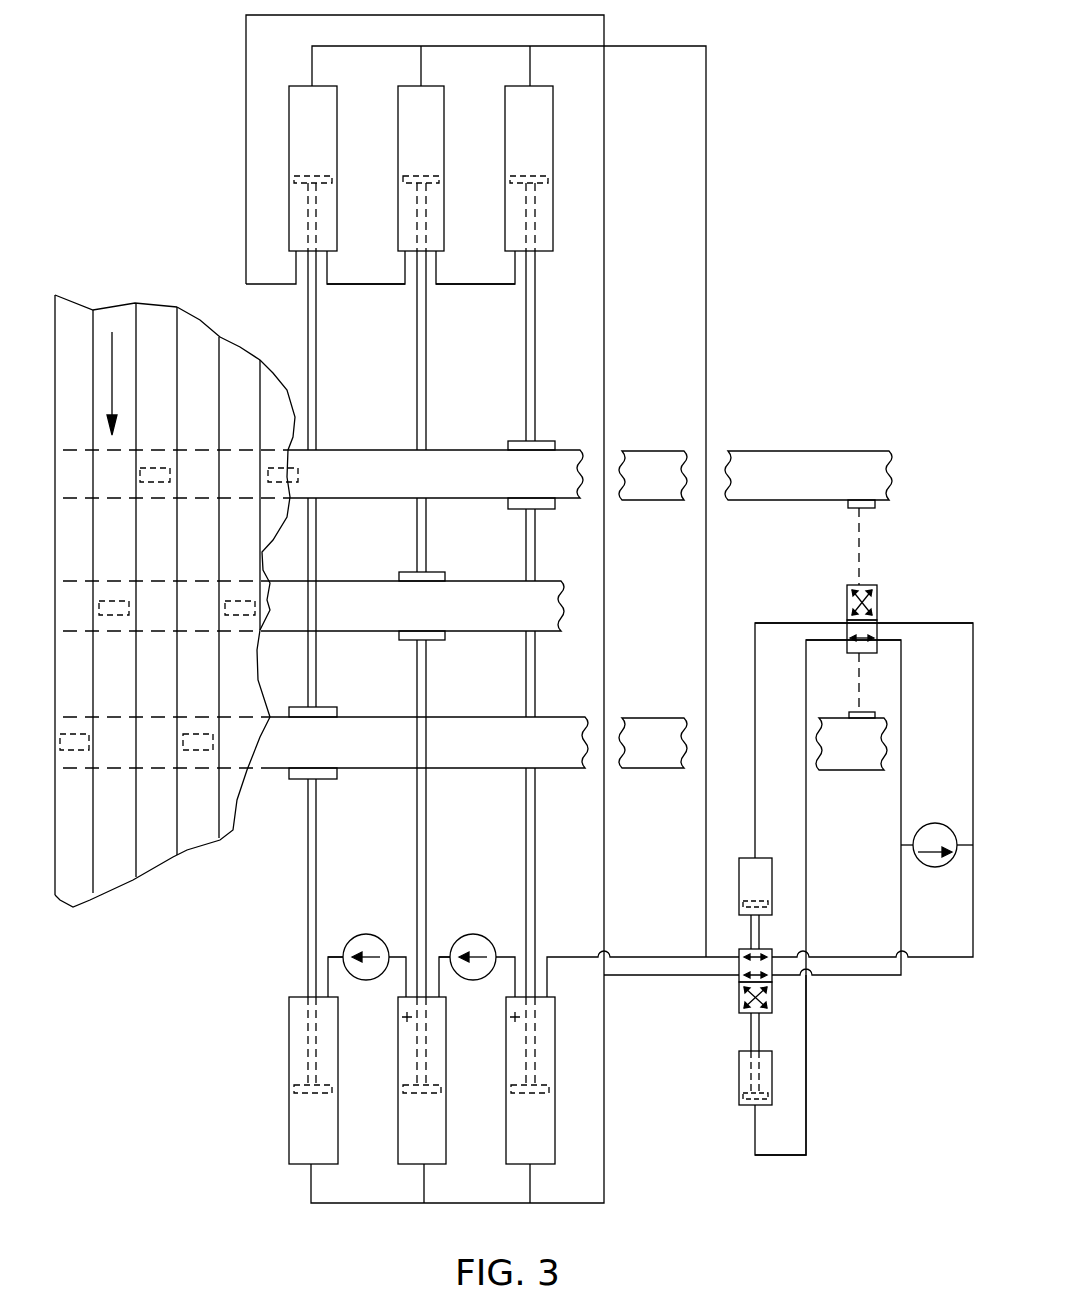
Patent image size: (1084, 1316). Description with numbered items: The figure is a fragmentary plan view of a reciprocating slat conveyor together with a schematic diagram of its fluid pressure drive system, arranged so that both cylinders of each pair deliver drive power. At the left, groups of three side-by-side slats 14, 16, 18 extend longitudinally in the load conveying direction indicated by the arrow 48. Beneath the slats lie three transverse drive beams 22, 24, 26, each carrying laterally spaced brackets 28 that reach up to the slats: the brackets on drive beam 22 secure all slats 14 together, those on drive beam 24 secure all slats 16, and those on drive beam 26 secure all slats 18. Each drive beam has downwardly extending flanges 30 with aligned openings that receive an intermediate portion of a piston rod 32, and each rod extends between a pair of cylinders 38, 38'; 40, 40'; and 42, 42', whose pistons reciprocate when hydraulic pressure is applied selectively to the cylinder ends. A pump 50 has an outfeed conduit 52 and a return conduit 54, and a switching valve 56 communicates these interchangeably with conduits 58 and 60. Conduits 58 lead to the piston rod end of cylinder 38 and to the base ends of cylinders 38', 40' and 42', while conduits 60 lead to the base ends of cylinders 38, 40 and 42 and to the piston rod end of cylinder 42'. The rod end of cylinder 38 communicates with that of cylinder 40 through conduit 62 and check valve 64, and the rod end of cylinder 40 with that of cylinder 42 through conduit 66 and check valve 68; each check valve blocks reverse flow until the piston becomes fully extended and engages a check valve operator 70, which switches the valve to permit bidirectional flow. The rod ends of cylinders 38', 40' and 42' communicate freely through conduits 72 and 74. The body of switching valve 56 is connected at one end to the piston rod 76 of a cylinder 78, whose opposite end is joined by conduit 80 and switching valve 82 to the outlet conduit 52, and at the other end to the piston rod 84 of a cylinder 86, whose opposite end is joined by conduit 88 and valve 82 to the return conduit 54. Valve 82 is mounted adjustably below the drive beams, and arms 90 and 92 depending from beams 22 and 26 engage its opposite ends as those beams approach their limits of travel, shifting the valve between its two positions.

The slat 14 is at (147, 312).
The slat 16 is at (196, 323).
The slat 18 is at (100, 312).
The transverse drive beam 22 is at (352, 456).
The transverse drive beam 24 is at (545, 588).
The transverse drive beam 26 is at (489, 769).
The brackets 28 is at (156, 484).
The flanges 30 is at (442, 576).
The piston rod 32 is at (416, 522).
The fluid pressure cylinder 38 is at (515, 1080).
The fluid pressure cylinder 38' is at (549, 168).
The fluid pressure cylinder 40 is at (406, 1080).
The fluid pressure cylinder 40' is at (440, 168).
The fluid pressure cylinder 42 is at (285, 1080).
The fluid pressure cylinder 42' is at (332, 168).
The arrow 48 is at (112, 383).
The fluid pressure pump 50 is at (940, 823).
The outfeed conduit 52 is at (960, 851).
The return conduit 54 is at (911, 851).
The switching valve 56 is at (739, 1000).
The conduits 58 is at (706, 148).
The conduits 60 is at (246, 143).
The conduit 62 is at (504, 947).
The check valve 64 is at (452, 940).
The conduit 66 is at (392, 947).
The check valve 68 is at (347, 940).
The check valve operator 70 is at (402, 1035).
The conduit 72 is at (500, 284).
The conduit 74 is at (385, 285).
The piston rod 76 is at (751, 927).
The fluid pressure cylinder 78 is at (739, 858).
The conduit 80 is at (780, 623).
The switching valve 82 is at (877, 600).
The piston rod 84 is at (751, 1030).
The fluid pressure cylinder 86 is at (739, 1083).
The conduit 88 is at (806, 1080).
The arm 90 is at (850, 508).
The arm 92 is at (850, 712).